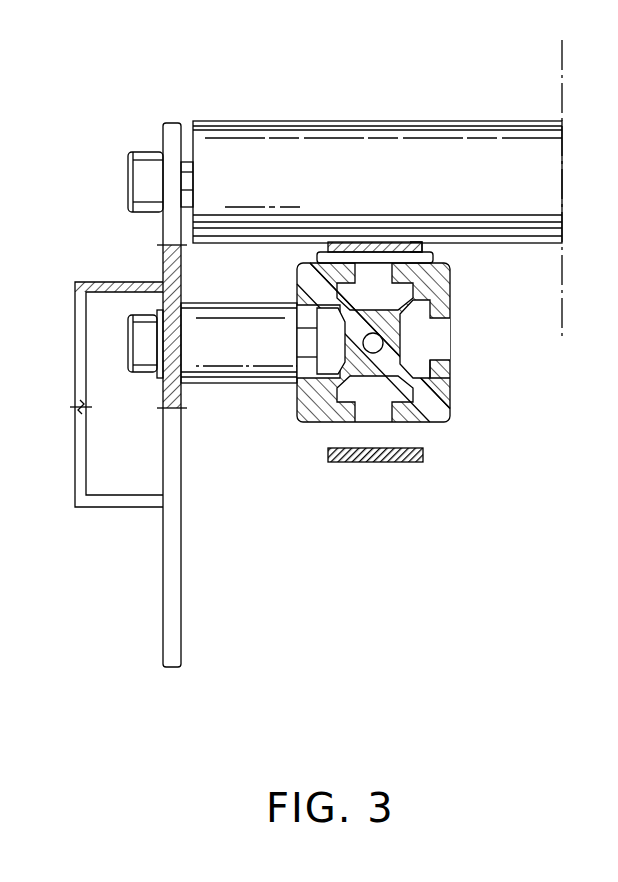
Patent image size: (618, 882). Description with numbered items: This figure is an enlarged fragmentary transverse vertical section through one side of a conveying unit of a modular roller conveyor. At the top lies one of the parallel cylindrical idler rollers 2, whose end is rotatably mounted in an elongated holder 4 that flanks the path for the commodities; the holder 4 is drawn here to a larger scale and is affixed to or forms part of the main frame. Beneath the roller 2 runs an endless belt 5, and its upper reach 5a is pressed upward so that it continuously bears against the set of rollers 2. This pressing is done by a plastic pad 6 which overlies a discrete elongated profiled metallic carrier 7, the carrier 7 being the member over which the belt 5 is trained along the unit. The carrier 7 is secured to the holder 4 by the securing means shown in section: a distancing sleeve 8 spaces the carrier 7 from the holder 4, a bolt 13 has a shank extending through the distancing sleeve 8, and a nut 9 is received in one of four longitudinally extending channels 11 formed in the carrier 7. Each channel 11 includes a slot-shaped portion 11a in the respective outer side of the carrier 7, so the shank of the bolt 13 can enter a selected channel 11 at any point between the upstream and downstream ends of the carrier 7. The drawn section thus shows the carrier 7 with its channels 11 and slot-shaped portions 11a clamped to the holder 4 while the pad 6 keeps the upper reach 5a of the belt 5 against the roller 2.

The idler roller 2 is at (392, 121).
The holder 4 is at (161, 553).
The belt 5 is at (347, 245).
The upper reach 5a is at (430, 246).
The plastic pad 6 is at (312, 258).
The carrier 7 is at (402, 369).
The distancing sleeve 8 is at (237, 352).
The nut 9 is at (300, 413).
The channel 11 is at (422, 325).
The slot-shaped portion 11a is at (442, 353).
The bolt 13 is at (137, 342).